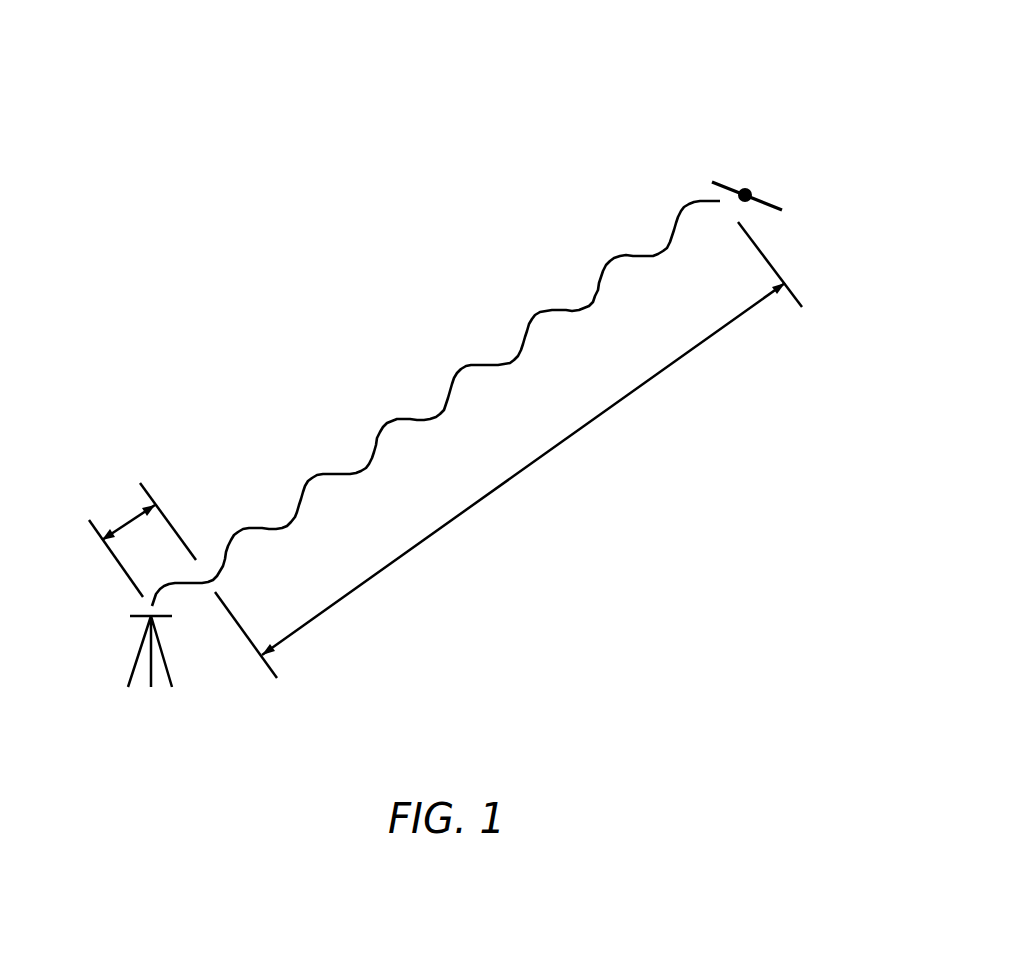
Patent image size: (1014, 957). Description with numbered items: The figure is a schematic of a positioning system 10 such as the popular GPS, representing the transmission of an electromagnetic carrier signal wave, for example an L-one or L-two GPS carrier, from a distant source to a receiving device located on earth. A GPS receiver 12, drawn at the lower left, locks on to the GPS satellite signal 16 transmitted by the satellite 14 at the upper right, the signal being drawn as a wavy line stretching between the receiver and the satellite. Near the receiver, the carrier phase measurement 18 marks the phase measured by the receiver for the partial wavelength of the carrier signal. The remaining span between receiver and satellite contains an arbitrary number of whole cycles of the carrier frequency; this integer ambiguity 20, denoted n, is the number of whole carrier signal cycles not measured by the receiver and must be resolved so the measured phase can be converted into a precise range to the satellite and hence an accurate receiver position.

The positioning system 10 is at (273, 95).
The GPS receiver 12 is at (133, 662).
The satellite 14 is at (749, 180).
The GPS satellite signal 16 is at (535, 305).
The carrier phase measurement 18 is at (123, 515).
The integer ambiguity 20 is at (555, 460).